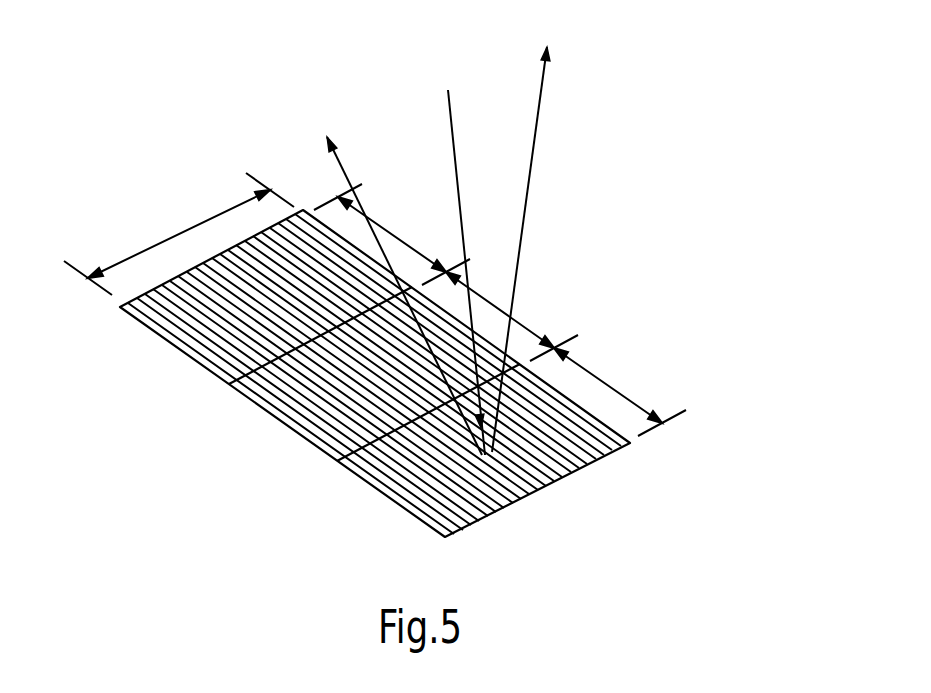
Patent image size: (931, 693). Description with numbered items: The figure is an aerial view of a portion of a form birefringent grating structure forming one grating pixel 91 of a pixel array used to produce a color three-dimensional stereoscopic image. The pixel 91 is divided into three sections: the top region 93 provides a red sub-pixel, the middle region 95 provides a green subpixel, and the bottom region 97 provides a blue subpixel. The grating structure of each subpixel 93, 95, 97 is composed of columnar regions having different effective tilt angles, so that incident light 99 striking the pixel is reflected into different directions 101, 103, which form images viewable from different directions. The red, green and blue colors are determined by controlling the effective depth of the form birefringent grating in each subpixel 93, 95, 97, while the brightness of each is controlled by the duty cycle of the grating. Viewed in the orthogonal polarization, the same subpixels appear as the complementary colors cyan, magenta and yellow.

The grating pixel 91 is at (232, 452).
The top region 93 is at (349, 284).
The middle region 95 is at (457, 366).
The bottom region 97 is at (620, 392).
The incident light 99 is at (448, 108).
The reflected direction 101 is at (335, 163).
The reflected direction 103 is at (540, 82).